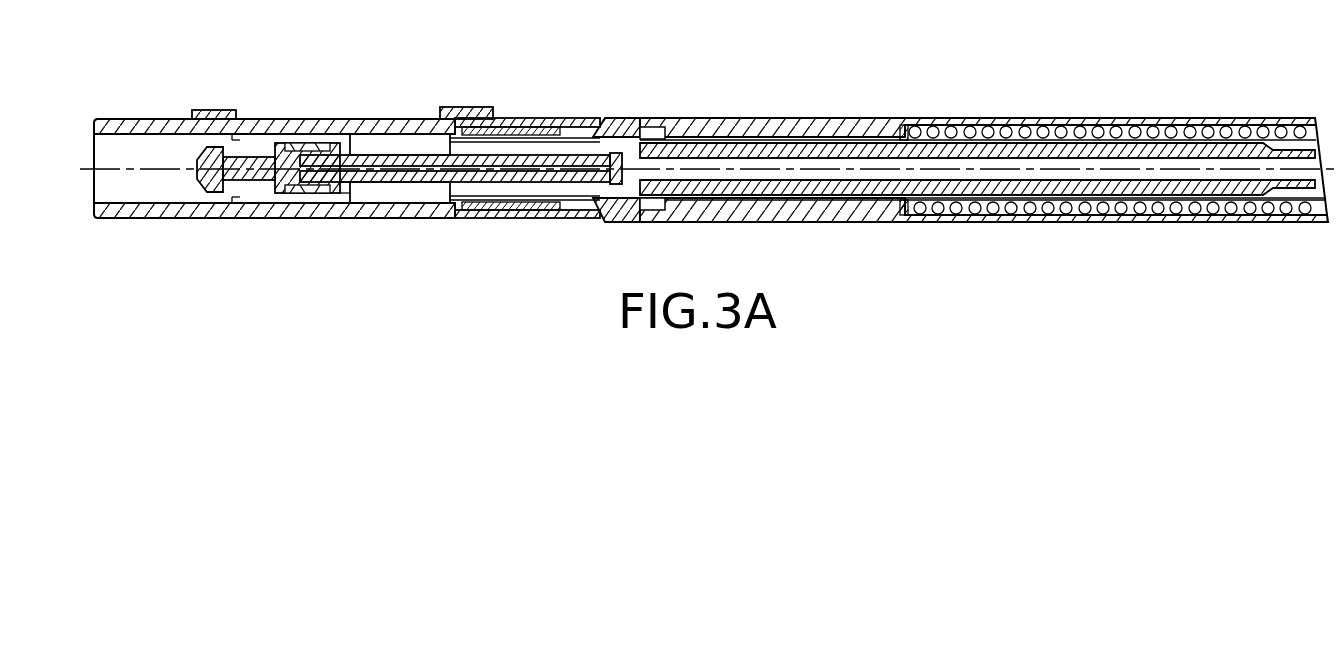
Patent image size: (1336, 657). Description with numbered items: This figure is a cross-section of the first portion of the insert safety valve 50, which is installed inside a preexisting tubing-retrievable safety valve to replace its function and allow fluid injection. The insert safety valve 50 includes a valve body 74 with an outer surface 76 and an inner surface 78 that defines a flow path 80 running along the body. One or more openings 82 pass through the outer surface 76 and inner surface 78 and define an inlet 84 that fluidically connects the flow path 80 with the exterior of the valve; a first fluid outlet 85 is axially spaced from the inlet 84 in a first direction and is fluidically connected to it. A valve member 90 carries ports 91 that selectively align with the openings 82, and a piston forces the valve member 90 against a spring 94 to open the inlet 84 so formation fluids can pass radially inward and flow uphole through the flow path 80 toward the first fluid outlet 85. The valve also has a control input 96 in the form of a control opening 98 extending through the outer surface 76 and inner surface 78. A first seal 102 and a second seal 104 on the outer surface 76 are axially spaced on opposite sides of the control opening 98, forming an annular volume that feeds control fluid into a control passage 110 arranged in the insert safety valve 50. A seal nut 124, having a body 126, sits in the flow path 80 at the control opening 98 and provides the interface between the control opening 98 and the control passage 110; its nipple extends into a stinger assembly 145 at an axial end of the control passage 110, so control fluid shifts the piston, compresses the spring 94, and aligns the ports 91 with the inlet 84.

The insert safety valve 50 is at (998, 254).
The valve body 74 is at (776, 110).
The outer surface 76 is at (863, 117).
The inner surface 78 is at (386, 123).
The flow path 80 is at (420, 190).
The openings 82 is at (566, 112).
The inlet 84 is at (575, 125).
The first fluid outlet 85 is at (126, 190).
The valve member 90 is at (862, 196).
The ports 91 is at (650, 200).
The spring 94 is at (1065, 210).
The control input 96 is at (296, 102).
The control opening 98 is at (310, 122).
The first seal 102 is at (212, 110).
The second seal 104 is at (470, 112).
The control passage 110 is at (1012, 165).
The seal nut 124 is at (368, 194).
The body 126 is at (252, 197).
The stinger assembly 145 is at (615, 125).